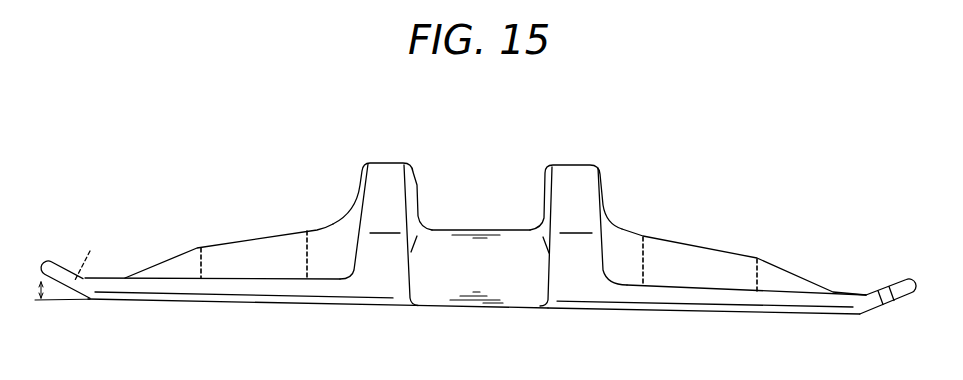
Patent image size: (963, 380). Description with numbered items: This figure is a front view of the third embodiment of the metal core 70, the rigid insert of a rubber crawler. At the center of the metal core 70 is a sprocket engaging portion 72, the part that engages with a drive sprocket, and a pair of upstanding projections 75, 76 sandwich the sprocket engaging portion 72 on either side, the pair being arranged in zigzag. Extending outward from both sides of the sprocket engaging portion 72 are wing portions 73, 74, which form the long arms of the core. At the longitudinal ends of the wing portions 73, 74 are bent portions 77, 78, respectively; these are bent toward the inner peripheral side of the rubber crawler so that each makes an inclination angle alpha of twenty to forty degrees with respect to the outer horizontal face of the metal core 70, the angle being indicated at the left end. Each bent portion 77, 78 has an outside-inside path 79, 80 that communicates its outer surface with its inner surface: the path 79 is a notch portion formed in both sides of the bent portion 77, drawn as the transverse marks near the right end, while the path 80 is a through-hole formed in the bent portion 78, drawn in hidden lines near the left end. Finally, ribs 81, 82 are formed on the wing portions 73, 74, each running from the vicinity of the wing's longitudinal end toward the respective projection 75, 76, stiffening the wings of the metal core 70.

The metal core 70 is at (631, 227).
The sprocket engaging portion 72 is at (480, 229).
The wing portion 73 is at (700, 301).
The wing portion 74 is at (250, 288).
The projection 75 is at (576, 163).
The projection 76 is at (386, 161).
The bent portion 77 is at (907, 277).
The bent portion 78 is at (53, 260).
The outside-inside path (notch portion) 79 is at (879, 291).
The outside-inside path (through-hole) 80 is at (63, 274).
The rib 81 is at (721, 252).
The rib 82 is at (248, 240).